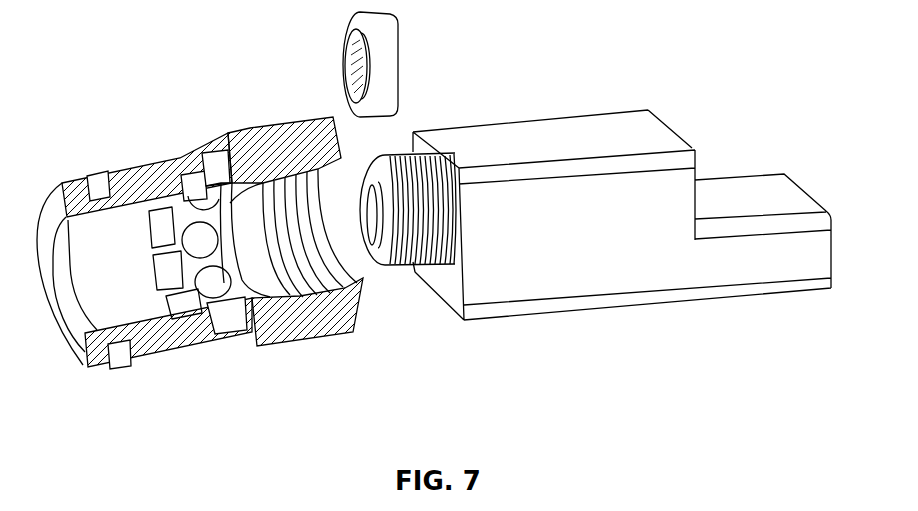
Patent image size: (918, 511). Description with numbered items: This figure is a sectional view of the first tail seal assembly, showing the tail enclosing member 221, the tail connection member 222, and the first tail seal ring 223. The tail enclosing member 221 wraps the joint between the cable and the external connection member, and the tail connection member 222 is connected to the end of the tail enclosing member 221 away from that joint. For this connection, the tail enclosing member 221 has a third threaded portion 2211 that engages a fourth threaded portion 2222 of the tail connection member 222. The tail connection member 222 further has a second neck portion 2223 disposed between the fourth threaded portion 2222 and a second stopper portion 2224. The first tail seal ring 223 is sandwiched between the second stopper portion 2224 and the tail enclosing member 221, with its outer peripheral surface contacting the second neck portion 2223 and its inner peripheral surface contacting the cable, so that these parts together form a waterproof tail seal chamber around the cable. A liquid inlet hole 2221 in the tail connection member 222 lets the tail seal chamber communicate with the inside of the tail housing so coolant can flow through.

The tail enclosing member 221 is at (624, 96).
The third threaded portion 2211 is at (397, 150).
The tail connection member 222 is at (152, 136).
The liquid inlet hole 2221 is at (210, 196).
The fourth threaded portion 2222 is at (362, 278).
The second neck portion 2223 is at (297, 338).
The second stopper portion 2224 is at (216, 334).
The first tail seal ring 223 is at (349, 22).